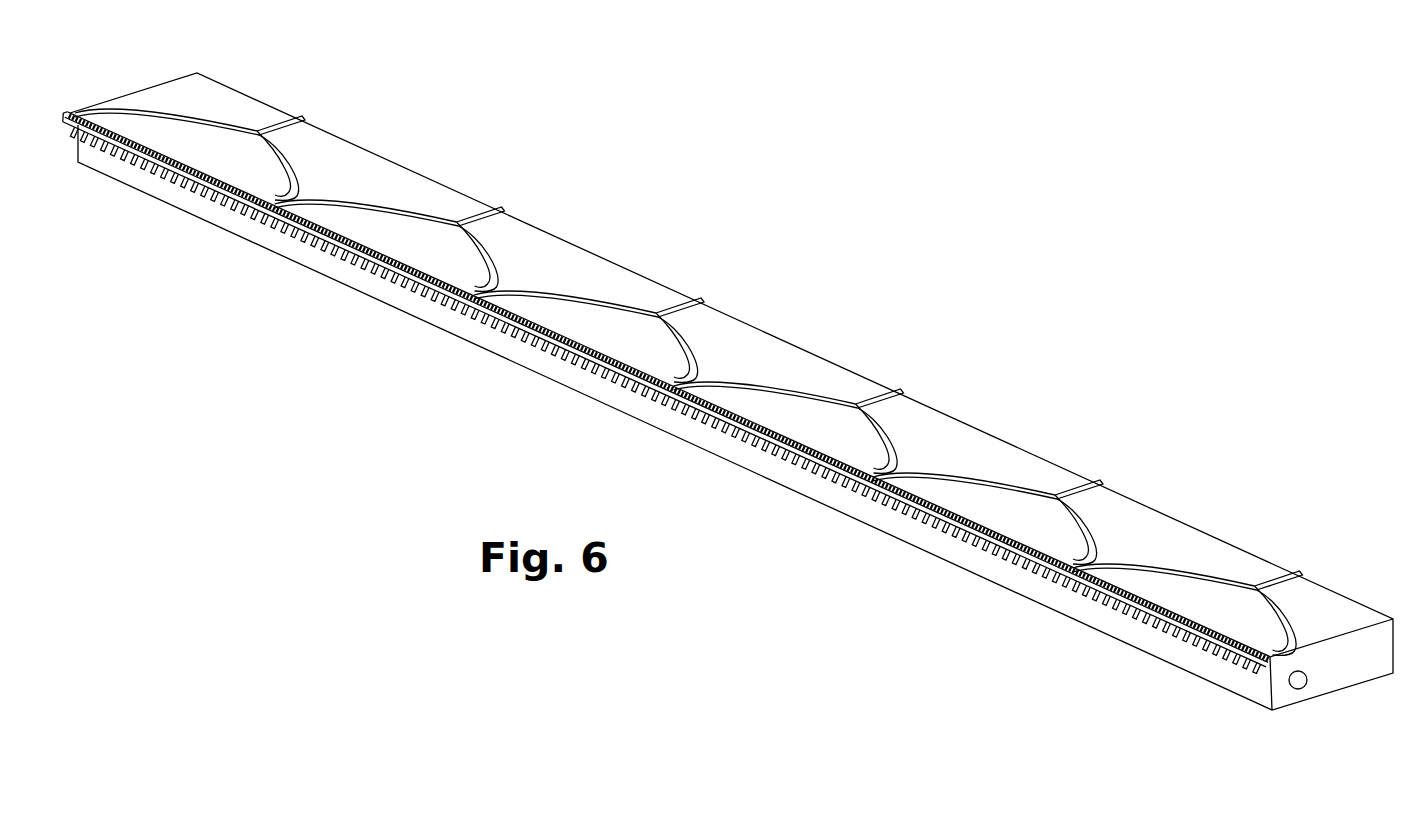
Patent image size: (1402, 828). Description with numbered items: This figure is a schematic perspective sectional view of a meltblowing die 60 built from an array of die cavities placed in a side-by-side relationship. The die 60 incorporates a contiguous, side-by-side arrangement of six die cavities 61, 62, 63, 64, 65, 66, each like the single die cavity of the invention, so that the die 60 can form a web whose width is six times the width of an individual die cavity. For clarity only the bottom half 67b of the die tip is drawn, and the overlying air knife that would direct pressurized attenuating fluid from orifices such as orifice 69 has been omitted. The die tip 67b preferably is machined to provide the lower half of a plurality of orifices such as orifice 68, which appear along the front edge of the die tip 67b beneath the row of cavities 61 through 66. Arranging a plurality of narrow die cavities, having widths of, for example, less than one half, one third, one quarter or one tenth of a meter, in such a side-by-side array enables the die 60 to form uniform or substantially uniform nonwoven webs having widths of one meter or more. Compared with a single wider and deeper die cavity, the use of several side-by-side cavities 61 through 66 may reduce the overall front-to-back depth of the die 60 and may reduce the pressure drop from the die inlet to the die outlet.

The meltblowing die 60 is at (875, 302).
The die cavity 61 is at (200, 117).
The die cavity 62 is at (382, 206).
The die cavity 63 is at (583, 297).
The die cavity 64 is at (784, 388).
The die cavity 65 is at (985, 480).
The die cavity 66 is at (1186, 572).
The bottom half of the die tip 67b is at (1300, 683).
The orifice 68 is at (1211, 641).
The orifice 69 is at (1168, 625).